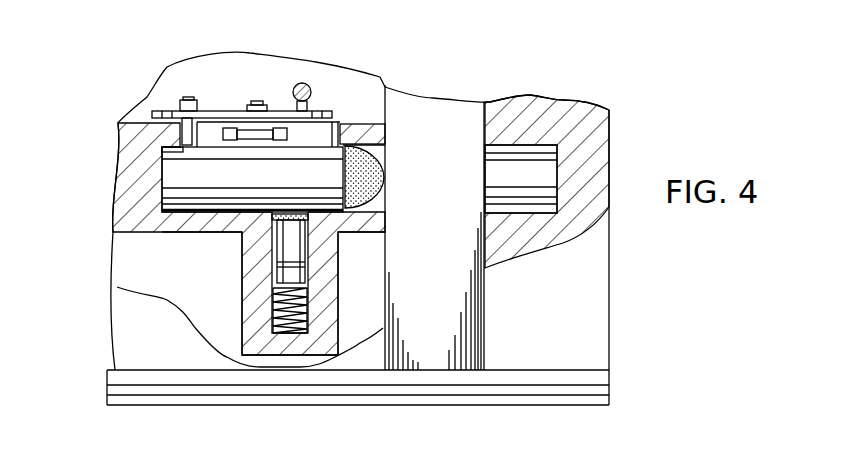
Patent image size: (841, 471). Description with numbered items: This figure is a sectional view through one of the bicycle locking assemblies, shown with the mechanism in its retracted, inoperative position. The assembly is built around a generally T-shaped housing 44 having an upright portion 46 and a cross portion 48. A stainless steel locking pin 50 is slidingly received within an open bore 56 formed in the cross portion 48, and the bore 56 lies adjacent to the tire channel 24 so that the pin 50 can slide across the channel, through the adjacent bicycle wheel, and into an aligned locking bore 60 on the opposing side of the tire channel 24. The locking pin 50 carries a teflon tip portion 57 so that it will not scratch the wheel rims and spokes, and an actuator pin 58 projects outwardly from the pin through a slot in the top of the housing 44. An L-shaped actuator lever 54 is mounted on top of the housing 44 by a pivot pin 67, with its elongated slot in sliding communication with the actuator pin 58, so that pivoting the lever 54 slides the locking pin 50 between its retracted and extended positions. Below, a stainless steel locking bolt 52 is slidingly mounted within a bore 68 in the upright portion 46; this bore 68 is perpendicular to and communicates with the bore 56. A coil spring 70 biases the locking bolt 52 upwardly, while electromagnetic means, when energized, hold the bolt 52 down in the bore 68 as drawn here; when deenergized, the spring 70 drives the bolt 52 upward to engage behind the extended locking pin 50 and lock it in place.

The tire channel 24 is at (443, 343).
The housing 44 is at (157, 235).
The upright portion 46 is at (242, 312).
The cross portion 48 is at (128, 188).
The locking pin 50 is at (328, 167).
The locking bolt 52 is at (308, 250).
The actuator lever 54 is at (215, 112).
The open bore 56 is at (387, 152).
The teflon tip portion 57 is at (387, 180).
The actuator pin 58 is at (182, 133).
The locking bore 60 is at (530, 157).
The pivot pin 67 is at (257, 107).
The bore 68 is at (242, 233).
The coil spring 70 is at (285, 336).